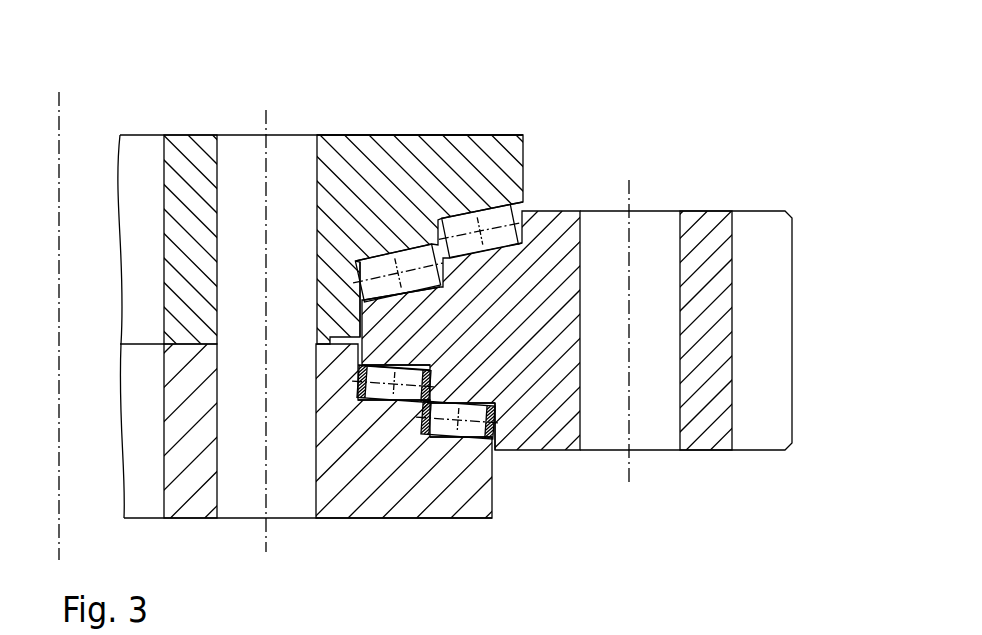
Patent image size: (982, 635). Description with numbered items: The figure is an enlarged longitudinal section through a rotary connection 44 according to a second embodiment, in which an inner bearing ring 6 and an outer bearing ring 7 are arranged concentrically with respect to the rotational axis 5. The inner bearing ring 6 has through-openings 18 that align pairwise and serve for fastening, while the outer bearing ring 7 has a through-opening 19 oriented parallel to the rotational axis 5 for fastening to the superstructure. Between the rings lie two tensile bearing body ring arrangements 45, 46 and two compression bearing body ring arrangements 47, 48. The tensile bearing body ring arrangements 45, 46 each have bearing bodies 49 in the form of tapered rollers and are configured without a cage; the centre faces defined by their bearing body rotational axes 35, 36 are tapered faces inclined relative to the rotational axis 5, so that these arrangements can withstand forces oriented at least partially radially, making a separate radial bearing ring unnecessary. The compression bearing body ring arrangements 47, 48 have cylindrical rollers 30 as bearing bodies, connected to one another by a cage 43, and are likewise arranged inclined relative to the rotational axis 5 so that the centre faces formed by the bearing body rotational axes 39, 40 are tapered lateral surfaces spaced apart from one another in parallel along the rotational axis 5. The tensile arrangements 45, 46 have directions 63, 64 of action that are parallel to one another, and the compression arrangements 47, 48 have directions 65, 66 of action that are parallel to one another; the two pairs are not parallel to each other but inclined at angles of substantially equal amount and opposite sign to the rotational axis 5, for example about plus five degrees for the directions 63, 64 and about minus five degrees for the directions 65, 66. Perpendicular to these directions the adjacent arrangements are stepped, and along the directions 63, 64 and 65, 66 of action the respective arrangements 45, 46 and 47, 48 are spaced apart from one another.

The rotational axis 5 is at (59, 142).
The inner bearing ring 6 is at (292, 128).
The outer bearing ring 7 is at (497, 440).
The through-openings 18 is at (257, 152).
The through-opening 19 is at (648, 443).
The cylindrical rollers 30 is at (422, 487).
The bearing body rotational axis 35 is at (473, 124).
The bearing body rotational axis 36 is at (333, 182).
The bearing body rotational axis 39 is at (390, 488).
The bearing body rotational axis 40 is at (460, 383).
The cage 43 is at (572, 464).
The rotary connection 44 is at (502, 104).
The tensile bearing body ring arrangement 45 is at (457, 131).
The tensile bearing body ring arrangement 46 is at (386, 153).
The compression bearing body ring arrangement 47 is at (394, 492).
The compression bearing body ring arrangement 48 is at (468, 448).
The bearing bodies 49 is at (420, 158).
The direction of action 63 is at (697, 265).
The direction of action 64 is at (620, 306).
The direction of action 65 is at (397, 366).
The direction of action 66 is at (686, 406).